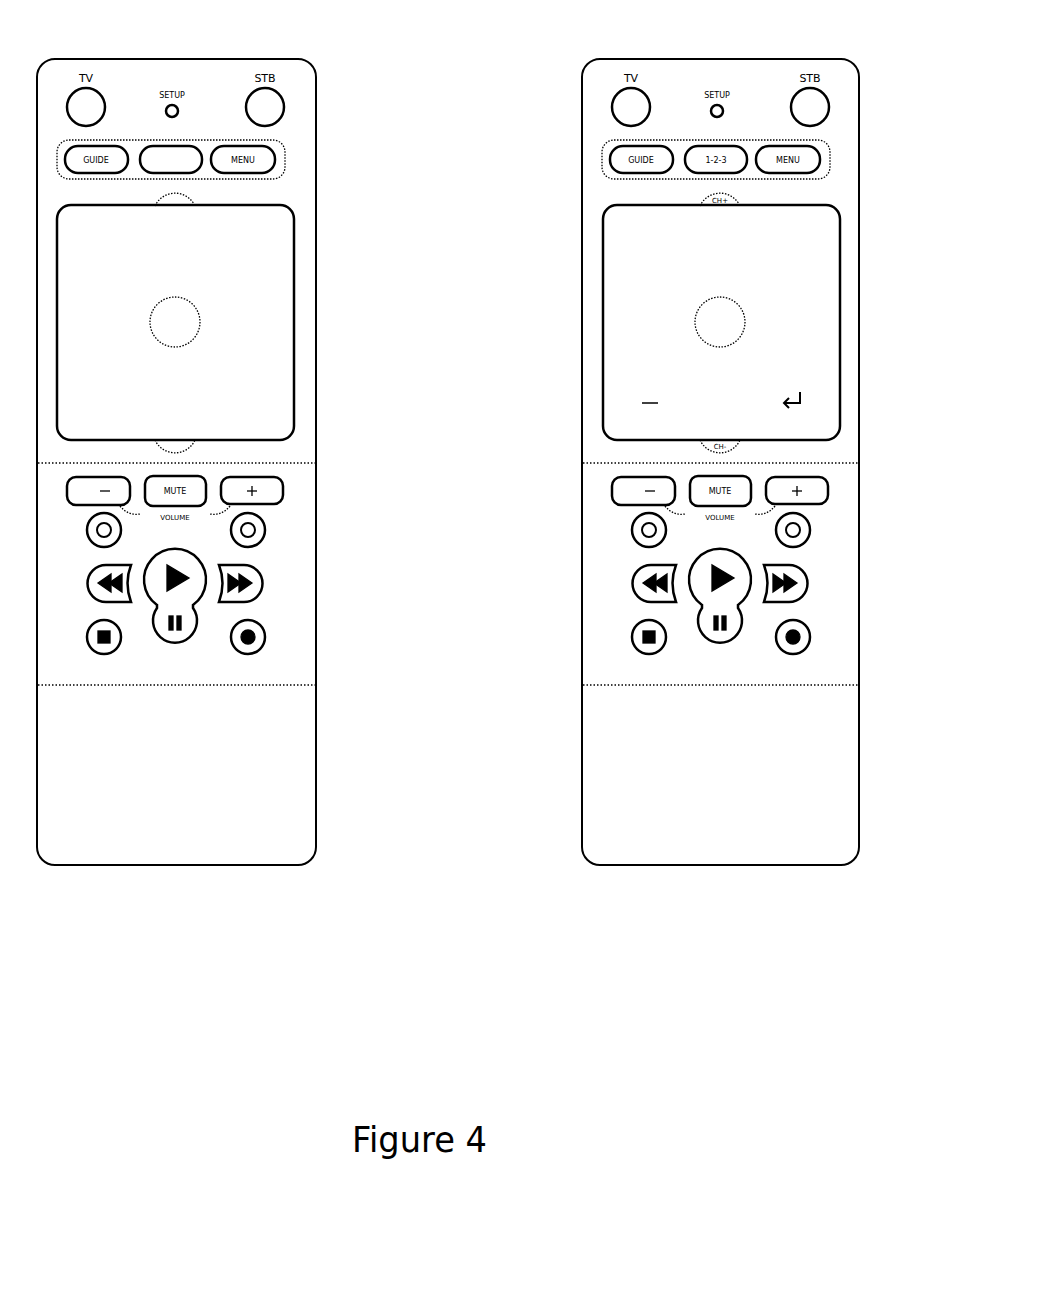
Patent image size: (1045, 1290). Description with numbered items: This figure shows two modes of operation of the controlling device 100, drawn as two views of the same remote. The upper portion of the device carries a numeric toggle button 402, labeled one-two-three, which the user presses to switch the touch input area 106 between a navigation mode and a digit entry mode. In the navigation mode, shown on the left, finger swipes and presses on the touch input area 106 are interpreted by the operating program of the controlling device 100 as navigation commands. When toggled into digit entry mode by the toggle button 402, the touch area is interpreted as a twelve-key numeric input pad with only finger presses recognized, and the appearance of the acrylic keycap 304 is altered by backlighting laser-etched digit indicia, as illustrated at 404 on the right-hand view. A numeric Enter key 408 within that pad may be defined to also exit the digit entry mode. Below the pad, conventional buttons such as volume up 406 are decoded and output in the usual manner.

The controlling device 100 is at (418, 1060).
The touch input area 106 is at (212, 411).
The acrylic keycap 304 is at (606, 428).
The numeric toggle button 402 is at (190, 156).
The altered appearance of touch input pad in digit entry mode 404 is at (630, 283).
The volume up button 406 is at (282, 492).
The numeric Enter key 408 is at (794, 405).